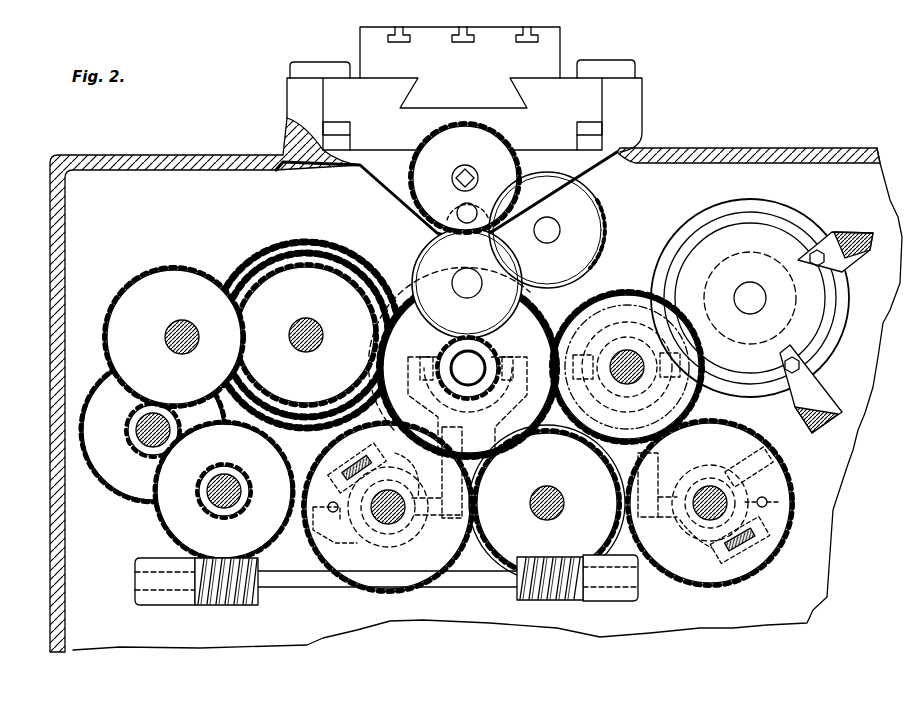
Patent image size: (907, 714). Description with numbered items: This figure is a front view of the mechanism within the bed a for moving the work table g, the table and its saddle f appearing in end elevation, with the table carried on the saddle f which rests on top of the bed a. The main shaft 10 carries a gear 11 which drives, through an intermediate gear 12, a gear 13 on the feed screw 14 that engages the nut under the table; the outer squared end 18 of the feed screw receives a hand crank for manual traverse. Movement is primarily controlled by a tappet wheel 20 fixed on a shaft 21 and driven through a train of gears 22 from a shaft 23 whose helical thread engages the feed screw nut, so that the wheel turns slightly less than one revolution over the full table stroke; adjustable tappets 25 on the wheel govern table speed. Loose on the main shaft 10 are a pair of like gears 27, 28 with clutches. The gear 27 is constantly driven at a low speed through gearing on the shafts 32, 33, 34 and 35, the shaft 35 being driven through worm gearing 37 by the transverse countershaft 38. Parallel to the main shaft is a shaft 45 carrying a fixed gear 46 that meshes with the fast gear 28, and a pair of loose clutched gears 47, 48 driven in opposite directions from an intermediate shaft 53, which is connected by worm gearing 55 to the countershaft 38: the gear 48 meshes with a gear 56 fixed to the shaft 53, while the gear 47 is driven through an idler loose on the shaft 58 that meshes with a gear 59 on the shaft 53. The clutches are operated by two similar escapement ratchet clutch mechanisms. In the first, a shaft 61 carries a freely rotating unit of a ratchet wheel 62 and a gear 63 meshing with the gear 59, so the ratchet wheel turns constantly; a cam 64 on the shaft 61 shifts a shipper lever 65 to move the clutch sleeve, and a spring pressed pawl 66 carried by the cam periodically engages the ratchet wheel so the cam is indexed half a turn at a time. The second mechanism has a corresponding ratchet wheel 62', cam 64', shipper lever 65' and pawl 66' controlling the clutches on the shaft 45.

The bed a is at (753, 148).
The saddle f is at (464, 106).
The work table g is at (460, 67).
The main shaft 10 is at (470, 351).
The gear 11 is at (450, 375).
The intermediate gear 12 is at (441, 264).
The gear 13 is at (440, 148).
The feed screw 14 is at (476, 176).
The outer squared end 18 is at (457, 181).
The tappet wheel 20 is at (783, 232).
The shaft 21 is at (747, 288).
The train of gears 22 is at (646, 208).
The shaft 23 is at (457, 214).
The tappets 25 is at (868, 250).
The gear 27 is at (468, 368).
The gear 28 is at (446, 279).
The shaft 32 is at (306, 352).
The shaft 33 is at (182, 354).
The shaft 34 is at (153, 448).
The shaft 35 is at (222, 509).
The worm gearing 37 is at (258, 568).
The countershaft 38 is at (477, 582).
The shaft 45 is at (626, 349).
The gear 46 is at (582, 318).
The gear 47 is at (710, 503).
The gear 48 is at (552, 352).
The intermediate shaft 53 is at (548, 521).
The worm gearing 55 is at (557, 592).
The gear 56 is at (483, 457).
The shaft 58 is at (711, 485).
The gear 59 is at (547, 503).
The shaft 61 is at (400, 518).
The ratchet wheel 62 is at (384, 468).
The ratchet wheel 62' is at (760, 457).
The gear 63 is at (388, 507).
The cam 64 is at (409, 473).
The cam 64' is at (706, 539).
The shipper lever 65 is at (437, 468).
The shipper lever 65' is at (661, 485).
The spring pressed pawl 66 is at (335, 526).
The spring pressed pawl 66' is at (780, 481).